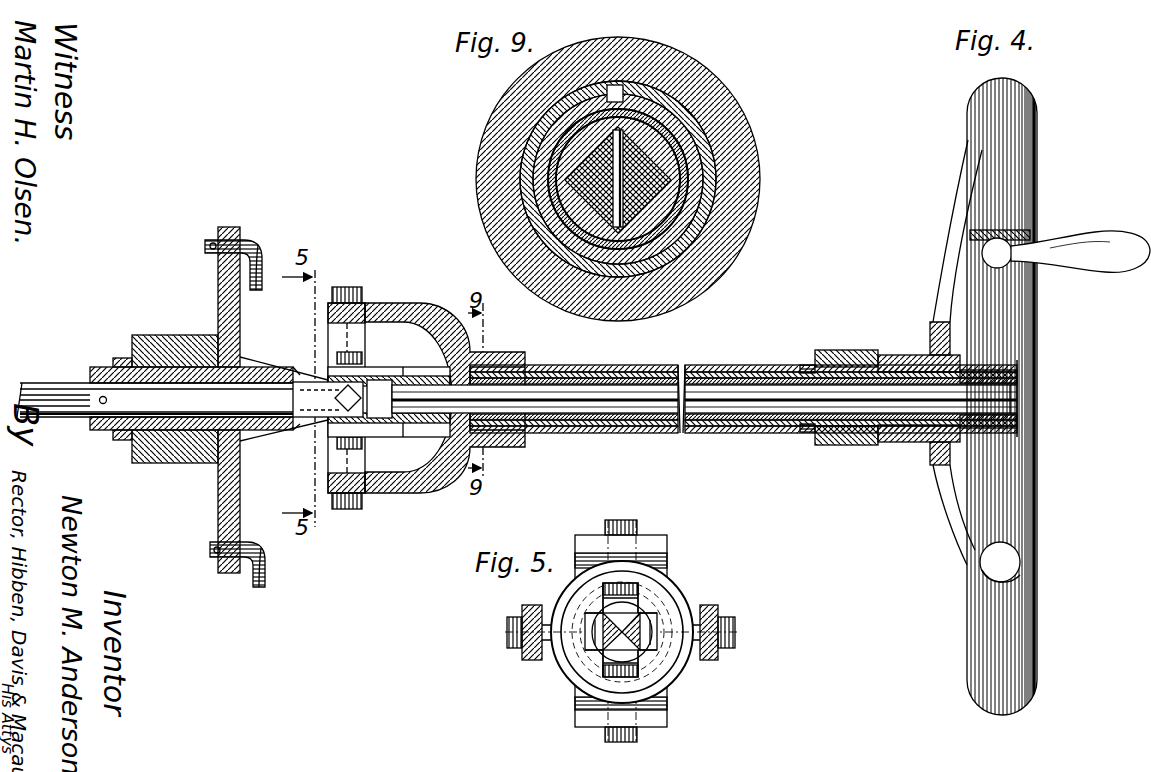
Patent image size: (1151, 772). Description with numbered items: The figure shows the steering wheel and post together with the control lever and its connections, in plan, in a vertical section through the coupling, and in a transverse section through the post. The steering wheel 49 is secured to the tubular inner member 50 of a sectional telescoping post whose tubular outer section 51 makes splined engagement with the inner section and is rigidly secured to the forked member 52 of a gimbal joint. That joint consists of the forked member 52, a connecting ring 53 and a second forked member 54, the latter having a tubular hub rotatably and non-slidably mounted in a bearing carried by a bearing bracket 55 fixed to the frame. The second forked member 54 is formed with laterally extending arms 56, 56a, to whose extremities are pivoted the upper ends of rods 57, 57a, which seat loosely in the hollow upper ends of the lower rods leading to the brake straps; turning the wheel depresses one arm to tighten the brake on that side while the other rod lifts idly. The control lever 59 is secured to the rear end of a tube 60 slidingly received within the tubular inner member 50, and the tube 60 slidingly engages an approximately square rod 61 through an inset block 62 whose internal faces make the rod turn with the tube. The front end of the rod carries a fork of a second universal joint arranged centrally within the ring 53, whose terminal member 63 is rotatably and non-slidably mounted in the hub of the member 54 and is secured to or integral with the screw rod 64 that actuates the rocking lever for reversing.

In FIG. 4, the steering wheel 49 is at (1022, 173).
In FIG. 4, the tubular inner member 50 is at (757, 366).
In FIG. 9, the tubular inner member 50 is at (707, 207).
In FIG. 4, the tubular outer section 51 is at (712, 375).
In FIG. 9, the tubular outer section 51 is at (698, 193).
In FIG. 4, the forked member 52 is at (492, 352).
In FIG. 9, the forked member 52 is at (762, 162).
In FIG. 5, the forked member 52 is at (667, 545).
In FIG. 4, the connecting ring 53 is at (375, 334).
In FIG. 5, the connecting ring 53 is at (676, 602).
In FIG. 4, the second forked member 54 is at (268, 368).
In FIG. 5, the second forked member 54 is at (530, 607).
In FIG. 4, the bearing bracket 55 is at (178, 336).
In FIG. 4, the laterally extending arm 56 is at (218, 516).
In FIG. 4, the laterally extending arm 56a is at (218, 283).
In FIG. 4, the rod 57 is at (266, 576).
In FIG. 4, the rod 57a is at (263, 254).
In FIG. 4, the control lever 59 is at (1000, 310).
In FIG. 4, the tube 60 is at (690, 368).
In FIG. 9, the tube 60 is at (683, 215).
In FIG. 4, the approximately square rod 61 is at (755, 404).
In FIG. 9, the approximately square rod 61 is at (640, 172).
In FIG. 4, the inset block 62 is at (372, 380).
In FIG. 5, the inset block 62 is at (641, 600).
In FIG. 4, the terminal member 63 is at (316, 406).
In FIG. 5, the terminal member 63 is at (594, 633).
In FIG. 4, the screw rod 64 is at (55, 392).